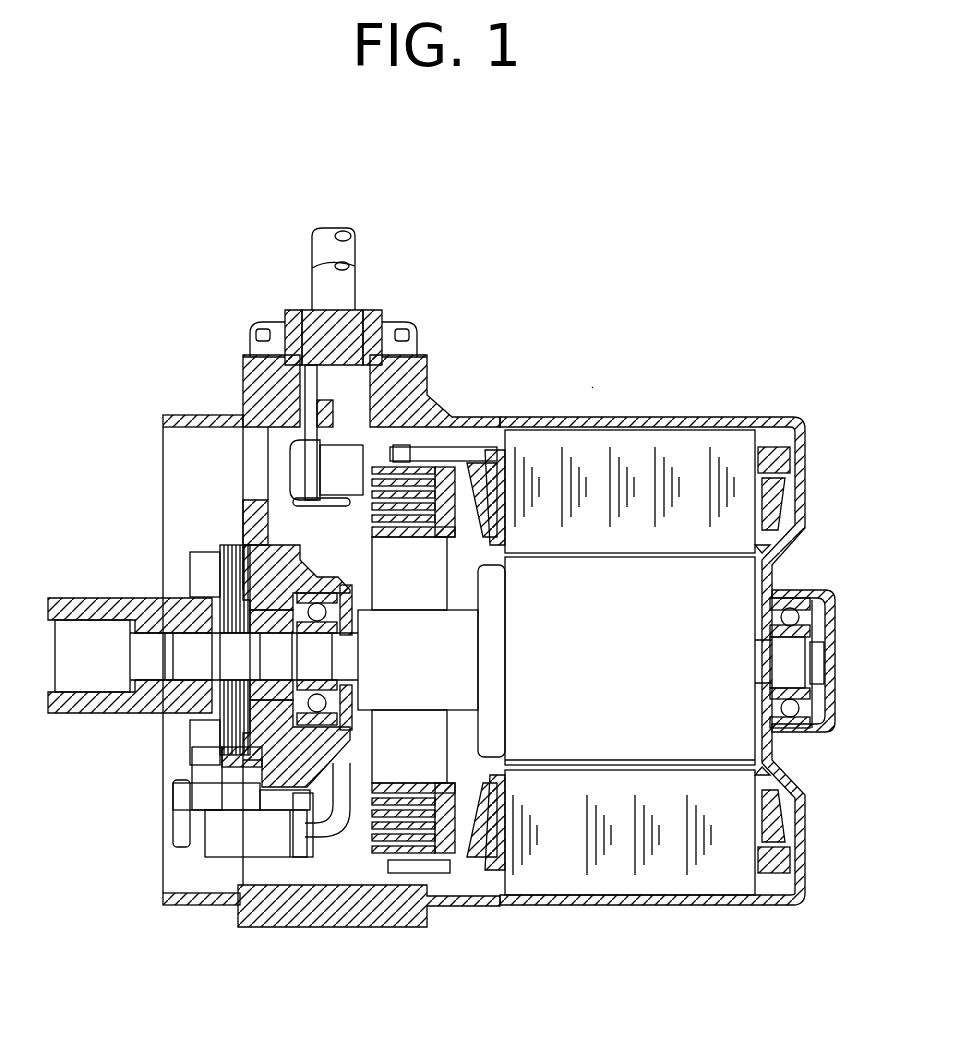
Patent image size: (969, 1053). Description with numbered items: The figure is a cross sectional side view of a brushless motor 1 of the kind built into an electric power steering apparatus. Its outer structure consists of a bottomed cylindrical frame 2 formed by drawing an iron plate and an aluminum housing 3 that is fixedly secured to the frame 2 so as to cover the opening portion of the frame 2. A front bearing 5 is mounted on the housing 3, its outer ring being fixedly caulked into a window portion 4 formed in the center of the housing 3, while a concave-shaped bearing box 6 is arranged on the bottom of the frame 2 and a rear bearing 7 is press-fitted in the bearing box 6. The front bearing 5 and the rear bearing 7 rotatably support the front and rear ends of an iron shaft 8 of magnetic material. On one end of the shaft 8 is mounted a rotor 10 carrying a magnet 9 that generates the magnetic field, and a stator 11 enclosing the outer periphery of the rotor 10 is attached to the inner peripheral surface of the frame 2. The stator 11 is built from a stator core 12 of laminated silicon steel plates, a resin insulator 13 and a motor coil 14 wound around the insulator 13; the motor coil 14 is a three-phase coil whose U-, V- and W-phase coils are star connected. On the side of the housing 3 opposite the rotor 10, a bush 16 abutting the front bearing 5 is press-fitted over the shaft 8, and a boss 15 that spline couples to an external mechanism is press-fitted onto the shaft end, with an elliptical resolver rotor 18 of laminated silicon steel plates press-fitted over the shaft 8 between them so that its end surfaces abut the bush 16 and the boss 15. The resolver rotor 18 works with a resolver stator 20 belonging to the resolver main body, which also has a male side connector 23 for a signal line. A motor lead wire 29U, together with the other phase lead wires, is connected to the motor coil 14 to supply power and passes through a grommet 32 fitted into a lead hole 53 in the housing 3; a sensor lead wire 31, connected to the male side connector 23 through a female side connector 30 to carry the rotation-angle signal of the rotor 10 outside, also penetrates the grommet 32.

The brushless motor 1 is at (592, 387).
The frame 2 is at (655, 905).
The housing 3 is at (378, 915).
The window portion 4 is at (263, 835).
The front bearing 5 is at (265, 745).
The bearing box 6 is at (797, 593).
The rear bearing 7 is at (800, 730).
The shaft 8 is at (188, 663).
The magnet 9 is at (655, 590).
The rotor 10 is at (570, 720).
The stator 11 is at (692, 853).
The stator core 12 is at (630, 853).
The insulator 13 is at (770, 870).
The motor coil 14 is at (783, 505).
The boss 15 is at (103, 600).
The bush 16 is at (305, 787).
The resolver rotor 18 is at (230, 613).
The resolver stator 20 is at (305, 715).
The male side connector 23 is at (275, 727).
The motor lead wire 29U is at (338, 290).
The female side connector 30 is at (307, 827).
The sensor lead wire 31 is at (340, 250).
The grommet 32 is at (305, 320).
The lead hole 53 is at (355, 320).